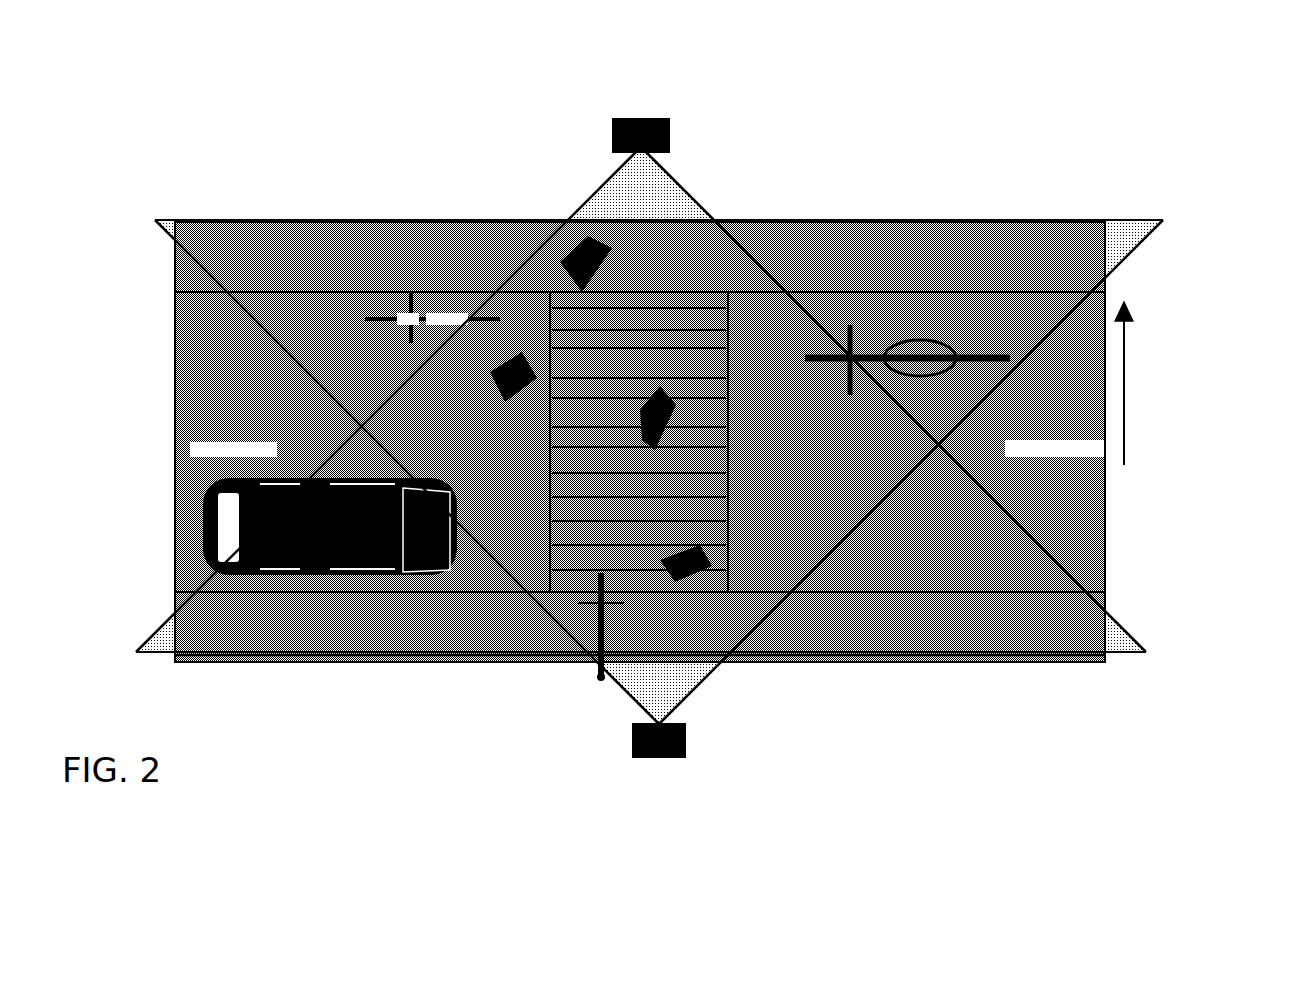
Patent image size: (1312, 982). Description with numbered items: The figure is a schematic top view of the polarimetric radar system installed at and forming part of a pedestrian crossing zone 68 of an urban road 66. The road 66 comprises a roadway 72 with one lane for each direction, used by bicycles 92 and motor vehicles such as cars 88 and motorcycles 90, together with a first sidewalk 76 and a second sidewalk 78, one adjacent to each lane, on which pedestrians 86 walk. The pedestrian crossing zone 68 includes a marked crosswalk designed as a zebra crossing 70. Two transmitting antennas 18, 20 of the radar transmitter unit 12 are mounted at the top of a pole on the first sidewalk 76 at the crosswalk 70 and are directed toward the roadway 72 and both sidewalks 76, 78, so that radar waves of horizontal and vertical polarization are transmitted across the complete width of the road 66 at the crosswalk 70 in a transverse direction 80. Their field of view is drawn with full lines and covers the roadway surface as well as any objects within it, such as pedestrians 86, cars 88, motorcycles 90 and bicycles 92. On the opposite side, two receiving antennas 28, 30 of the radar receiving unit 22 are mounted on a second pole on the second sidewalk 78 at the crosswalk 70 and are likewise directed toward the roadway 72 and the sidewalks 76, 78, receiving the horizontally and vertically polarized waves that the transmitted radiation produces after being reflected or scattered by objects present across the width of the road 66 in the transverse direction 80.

The radar transmitter unit 12 is at (670, 764).
The first transmitting antenna 18 is at (632, 724).
The second transmitting antenna 20 is at (688, 724).
The radar receiving unit 22 is at (657, 115).
The first receiving antenna 28 is at (662, 160).
The second receiving antenna 30 is at (620, 160).
The road 66 is at (1228, 177).
The pedestrian crossing zone 68 is at (912, 730).
The zebra crossing 70 is at (556, 560).
The roadway 72 is at (1085, 500).
The first sidewalk 76 is at (1042, 640).
The second sidewalk 78 is at (1048, 222).
The transverse direction 80 is at (1136, 375).
The pedestrians 86 is at (566, 220).
The cars 88 is at (275, 665).
The motorcycles 90 is at (920, 218).
The bicycles 92 is at (423, 218).